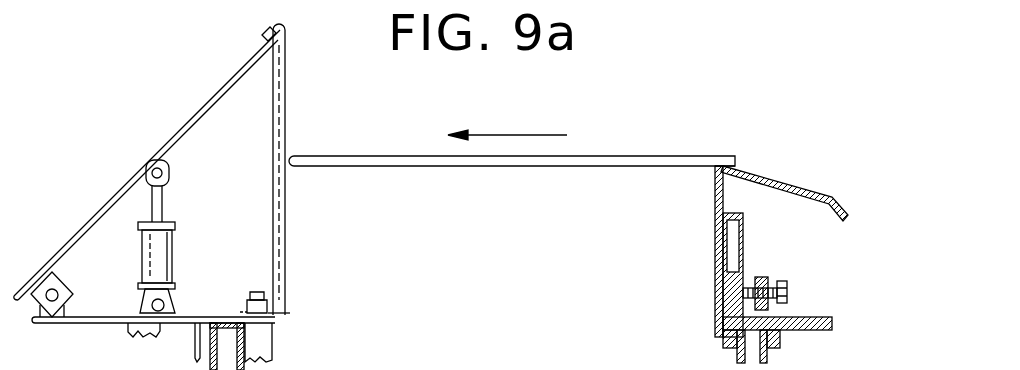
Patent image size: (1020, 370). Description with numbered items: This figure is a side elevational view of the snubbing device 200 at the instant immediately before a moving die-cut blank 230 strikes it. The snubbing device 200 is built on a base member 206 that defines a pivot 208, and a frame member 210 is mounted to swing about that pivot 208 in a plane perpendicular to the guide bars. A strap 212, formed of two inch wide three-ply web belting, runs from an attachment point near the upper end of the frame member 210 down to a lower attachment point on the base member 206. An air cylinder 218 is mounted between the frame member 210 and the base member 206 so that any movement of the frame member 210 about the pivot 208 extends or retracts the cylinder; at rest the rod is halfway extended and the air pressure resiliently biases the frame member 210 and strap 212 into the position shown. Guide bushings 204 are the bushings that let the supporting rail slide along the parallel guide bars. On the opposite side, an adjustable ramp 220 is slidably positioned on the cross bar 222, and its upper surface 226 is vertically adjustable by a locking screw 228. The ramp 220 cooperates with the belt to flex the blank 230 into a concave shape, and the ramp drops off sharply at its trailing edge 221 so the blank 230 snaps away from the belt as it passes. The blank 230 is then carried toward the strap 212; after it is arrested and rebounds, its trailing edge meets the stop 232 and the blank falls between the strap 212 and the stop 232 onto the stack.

The snubbing device 200 is at (124, 152).
The frame member 210 is at (207, 101).
The strap 212 is at (285, 227).
The base member 206 is at (198, 314).
The pivot 208 is at (50, 308).
The air cylinder 218 is at (173, 252).
The guide bushings 204 is at (247, 342).
The die-cut blank 230 is at (455, 166).
The ramp 220 is at (704, 242).
The trailing edge 221 is at (715, 168).
The upper surface 226 is at (848, 209).
The stop 232 is at (717, 305).
The cross bar 222 is at (767, 354).
The locking screw 228 is at (788, 289).